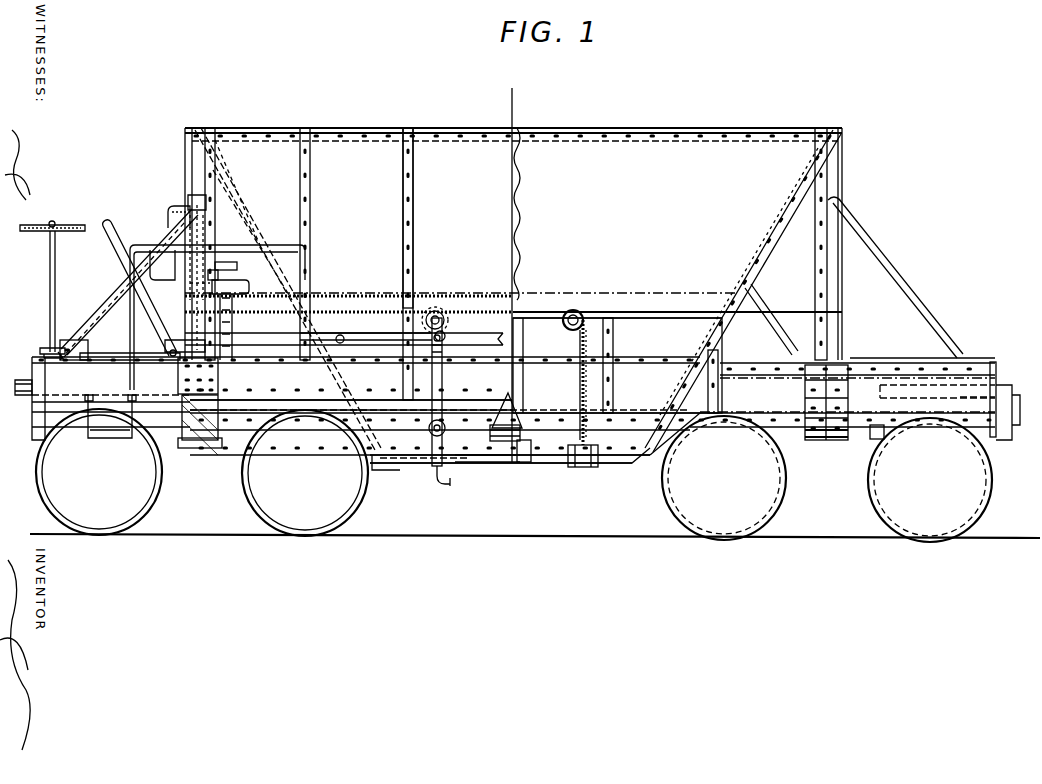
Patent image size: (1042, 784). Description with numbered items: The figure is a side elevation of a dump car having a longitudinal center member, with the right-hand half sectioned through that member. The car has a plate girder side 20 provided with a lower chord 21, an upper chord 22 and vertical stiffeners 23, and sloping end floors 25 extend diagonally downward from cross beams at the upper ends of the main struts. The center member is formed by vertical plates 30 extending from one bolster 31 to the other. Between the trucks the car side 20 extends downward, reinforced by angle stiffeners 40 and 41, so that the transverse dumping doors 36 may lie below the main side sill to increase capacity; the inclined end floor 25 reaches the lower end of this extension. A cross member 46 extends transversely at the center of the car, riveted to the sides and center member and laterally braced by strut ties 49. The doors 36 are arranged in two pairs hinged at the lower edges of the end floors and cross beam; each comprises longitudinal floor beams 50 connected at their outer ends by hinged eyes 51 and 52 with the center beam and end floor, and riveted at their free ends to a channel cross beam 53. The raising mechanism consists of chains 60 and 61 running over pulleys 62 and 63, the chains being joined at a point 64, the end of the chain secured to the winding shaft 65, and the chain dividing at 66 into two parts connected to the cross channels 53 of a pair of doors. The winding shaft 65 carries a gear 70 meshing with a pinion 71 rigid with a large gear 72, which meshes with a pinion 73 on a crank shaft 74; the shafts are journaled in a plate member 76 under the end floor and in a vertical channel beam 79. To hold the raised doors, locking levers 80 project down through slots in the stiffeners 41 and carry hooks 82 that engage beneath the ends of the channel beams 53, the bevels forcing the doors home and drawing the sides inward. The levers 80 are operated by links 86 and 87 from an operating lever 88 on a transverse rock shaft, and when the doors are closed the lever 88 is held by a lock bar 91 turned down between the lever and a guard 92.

The plate girder side 20 is at (513, 289).
The lower chord 21 is at (490, 355).
The upper chord 22 is at (455, 128).
The vertical stiffeners 23 is at (413, 213).
The sloping end floor 25 is at (762, 245).
The vertical plates 30 is at (617, 365).
The bolster 31 is at (200, 437).
The dumping doors 36 is at (410, 463).
The angle stiffener 40 is at (445, 400).
The angle stiffener 41 is at (483, 462).
The cross member 46 is at (526, 398).
The strut ties 49 is at (490, 433).
The floor beams 50 is at (392, 470).
The hinged eye 51 is at (525, 462).
The hinged eye 52 is at (400, 460).
The cross beam 53 is at (586, 467).
The chain 60 is at (442, 358).
The chain 61 is at (580, 352).
The pulley 62 is at (441, 312).
The pulley 63 is at (583, 315).
The chain connection point 64 is at (330, 300).
The winding shaft 65 is at (255, 335).
The chain dividing point 66 is at (583, 386).
The gear 70 is at (245, 288).
The pinion 71 is at (220, 262).
The large gear 72 is at (190, 298).
The pinion 73 is at (199, 262).
The crank shaft 74 is at (168, 215).
The plate member 76 is at (250, 222).
The vertical channel beam 79 is at (182, 287).
The locking lever 80 is at (442, 372).
The hook 82 is at (448, 485).
The link 86 is at (365, 345).
The link 87 is at (300, 333).
The operating lever 88 is at (165, 334).
The lock bar 91 is at (132, 250).
The guard 92 is at (288, 238).